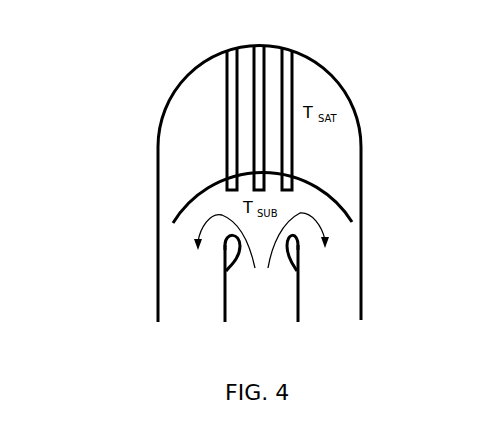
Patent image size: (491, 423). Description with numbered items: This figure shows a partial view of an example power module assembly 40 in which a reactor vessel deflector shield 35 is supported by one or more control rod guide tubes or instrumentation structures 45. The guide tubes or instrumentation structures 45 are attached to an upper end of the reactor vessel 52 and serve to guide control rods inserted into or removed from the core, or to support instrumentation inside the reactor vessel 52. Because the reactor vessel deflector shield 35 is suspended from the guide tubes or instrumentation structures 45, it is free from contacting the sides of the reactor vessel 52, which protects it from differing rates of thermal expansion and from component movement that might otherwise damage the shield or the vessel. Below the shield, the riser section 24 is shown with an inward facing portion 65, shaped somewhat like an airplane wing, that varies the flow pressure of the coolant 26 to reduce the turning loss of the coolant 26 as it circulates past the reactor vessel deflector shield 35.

The power module assembly 40 is at (137, 150).
The reactor vessel 52 is at (327, 67).
The control rod guide tubes or instrumentation structures 45 is at (218, 150).
The reactor vessel deflector shield 35 is at (330, 182).
The coolant 26 is at (195, 212).
The inward facing portion 65 is at (215, 260).
The riser section 24 is at (302, 293).